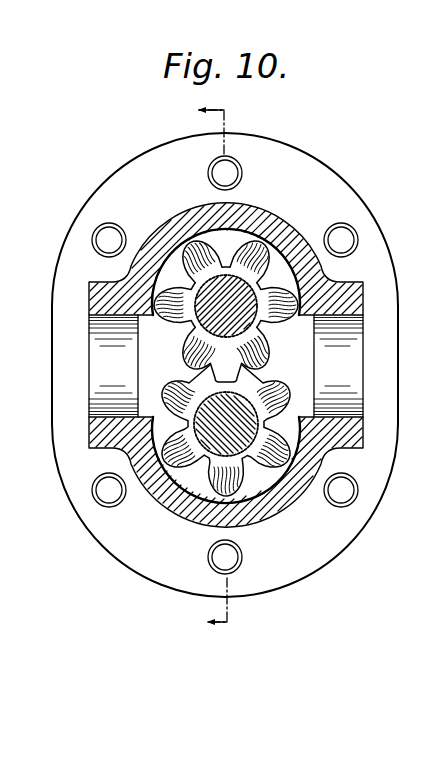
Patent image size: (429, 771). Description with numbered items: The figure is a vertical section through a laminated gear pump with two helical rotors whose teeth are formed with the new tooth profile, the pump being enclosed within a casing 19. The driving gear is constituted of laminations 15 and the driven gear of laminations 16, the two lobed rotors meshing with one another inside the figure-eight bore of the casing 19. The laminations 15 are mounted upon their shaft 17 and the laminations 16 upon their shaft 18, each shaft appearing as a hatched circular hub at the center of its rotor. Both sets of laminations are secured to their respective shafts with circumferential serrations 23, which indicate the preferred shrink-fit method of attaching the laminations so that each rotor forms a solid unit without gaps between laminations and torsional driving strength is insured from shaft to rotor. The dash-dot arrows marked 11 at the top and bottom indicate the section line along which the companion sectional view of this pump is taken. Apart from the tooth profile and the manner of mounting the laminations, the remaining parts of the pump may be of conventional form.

The section line 11— 11 is at (202, 367).
The laminations of the driving gear 15 is at (279, 275).
The laminations of the driven gear 16 is at (262, 478).
The shaft 17 is at (215, 300).
The shaft 18 is at (222, 421).
The casing 19 is at (191, 224).
The circumferential serrations 23 is at (252, 323).